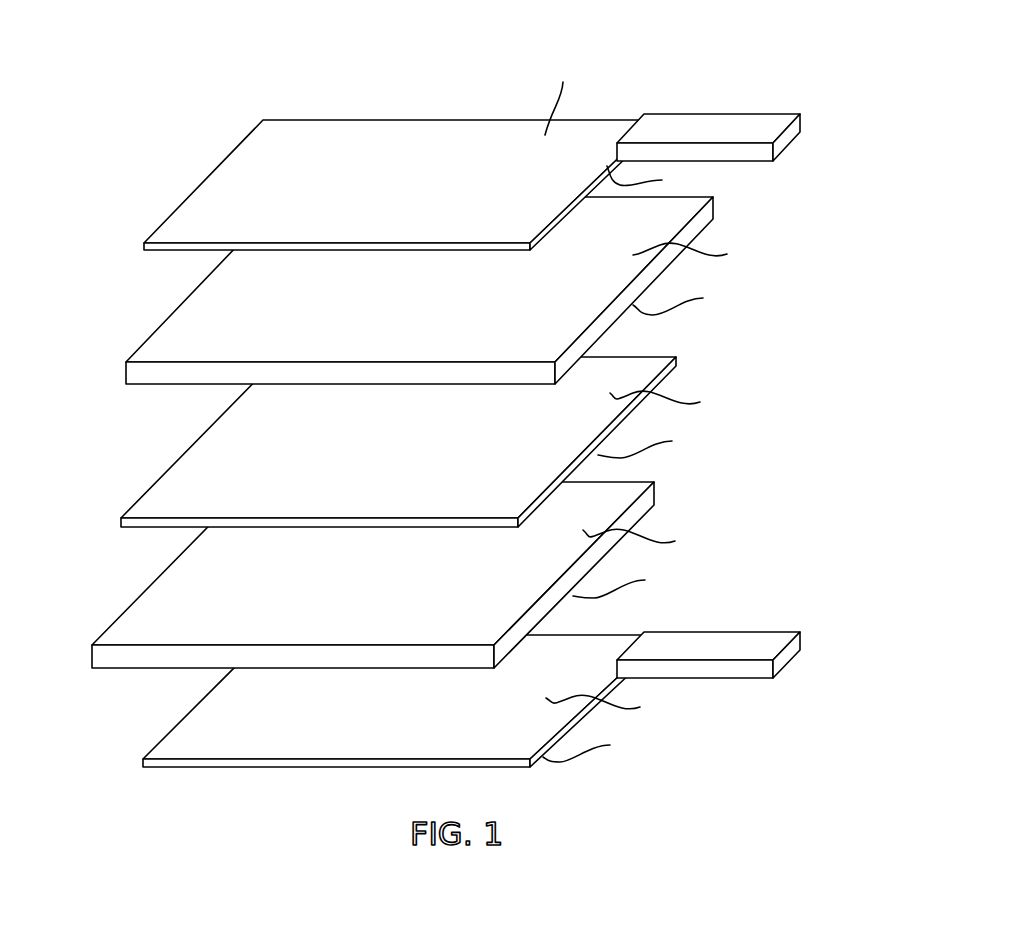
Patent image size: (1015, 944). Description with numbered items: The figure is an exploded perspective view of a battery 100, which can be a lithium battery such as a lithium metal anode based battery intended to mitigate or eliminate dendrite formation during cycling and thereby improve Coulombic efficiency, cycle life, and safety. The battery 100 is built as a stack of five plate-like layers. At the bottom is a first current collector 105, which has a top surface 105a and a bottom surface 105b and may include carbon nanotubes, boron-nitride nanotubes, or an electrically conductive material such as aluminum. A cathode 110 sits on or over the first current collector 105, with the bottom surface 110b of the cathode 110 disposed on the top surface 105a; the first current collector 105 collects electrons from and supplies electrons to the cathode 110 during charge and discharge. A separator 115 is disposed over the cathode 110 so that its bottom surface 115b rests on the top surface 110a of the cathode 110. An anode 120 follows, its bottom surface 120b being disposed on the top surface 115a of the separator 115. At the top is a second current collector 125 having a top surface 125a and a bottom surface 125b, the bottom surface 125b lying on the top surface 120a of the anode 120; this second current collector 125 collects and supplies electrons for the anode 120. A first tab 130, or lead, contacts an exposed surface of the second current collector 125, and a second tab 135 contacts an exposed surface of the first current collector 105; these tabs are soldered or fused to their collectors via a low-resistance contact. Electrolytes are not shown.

The battery 100 is at (923, 92).
The first current collector 105 is at (191, 711).
The top surface of first current collector 105a is at (619, 706).
The bottom surface of first current collector 105b is at (603, 748).
The cathode 110 is at (158, 578).
The top surface of cathode 110a is at (655, 541).
The bottom surface of cathode 110b is at (635, 583).
The separator 115 is at (190, 448).
The top surface of separator 115a is at (681, 402).
The bottom surface of separator 115b is at (660, 445).
The anode 120 is at (187, 298).
The top surface of anode 120a is at (706, 254).
The bottom surface of anode 120b is at (694, 302).
The second current collector 125 is at (231, 152).
The top surface of second current collector 125a is at (569, 97).
The bottom surface of second current collector 125b is at (660, 178).
The first tab 130 is at (800, 125).
The second tab 135 is at (803, 643).